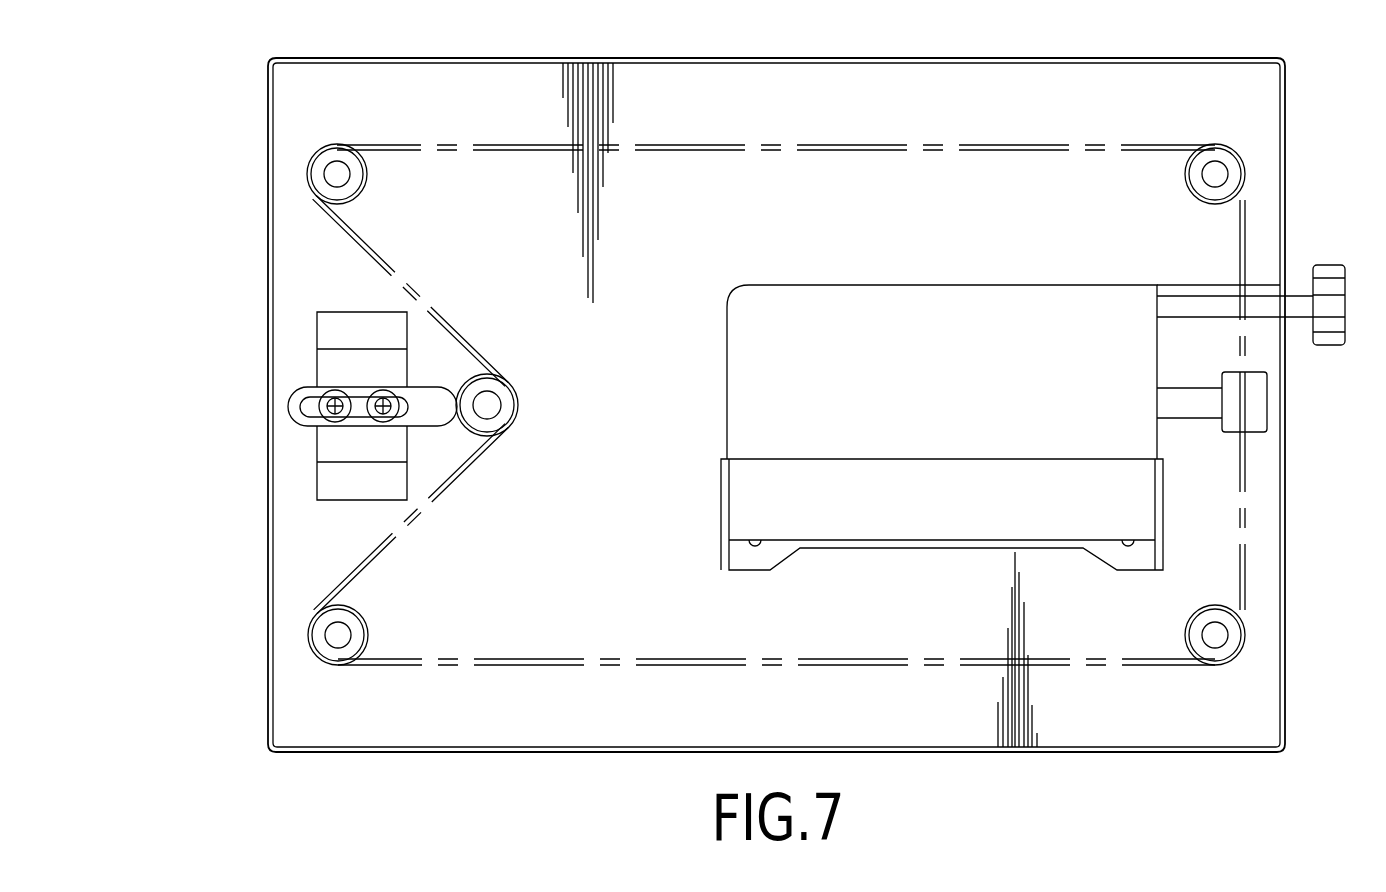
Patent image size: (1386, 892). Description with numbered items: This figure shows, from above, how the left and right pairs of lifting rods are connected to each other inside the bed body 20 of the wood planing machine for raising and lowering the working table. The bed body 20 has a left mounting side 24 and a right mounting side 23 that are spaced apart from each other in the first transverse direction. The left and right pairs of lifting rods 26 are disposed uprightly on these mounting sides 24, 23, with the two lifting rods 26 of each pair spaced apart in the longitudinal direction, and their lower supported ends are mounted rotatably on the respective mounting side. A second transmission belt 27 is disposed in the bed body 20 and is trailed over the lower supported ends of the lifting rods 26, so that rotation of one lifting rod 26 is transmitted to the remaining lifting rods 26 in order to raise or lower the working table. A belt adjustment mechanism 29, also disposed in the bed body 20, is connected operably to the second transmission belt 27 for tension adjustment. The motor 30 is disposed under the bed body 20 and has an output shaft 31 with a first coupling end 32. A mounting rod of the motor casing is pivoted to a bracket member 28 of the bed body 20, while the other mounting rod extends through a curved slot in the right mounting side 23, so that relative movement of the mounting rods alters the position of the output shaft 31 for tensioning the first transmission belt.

The bed body 20 is at (586, 755).
The right mounting side 23 is at (1287, 645).
The left mounting side 24 is at (268, 537).
The lifting rods 26 is at (337, 174).
The second transmission belt 27 is at (668, 143).
The bracket member 28 is at (767, 558).
The belt adjustment mechanism 29 is at (358, 328).
The motor 30 is at (890, 283).
The output shaft 31 is at (1177, 405).
The first coupling end 32 is at (1262, 409).